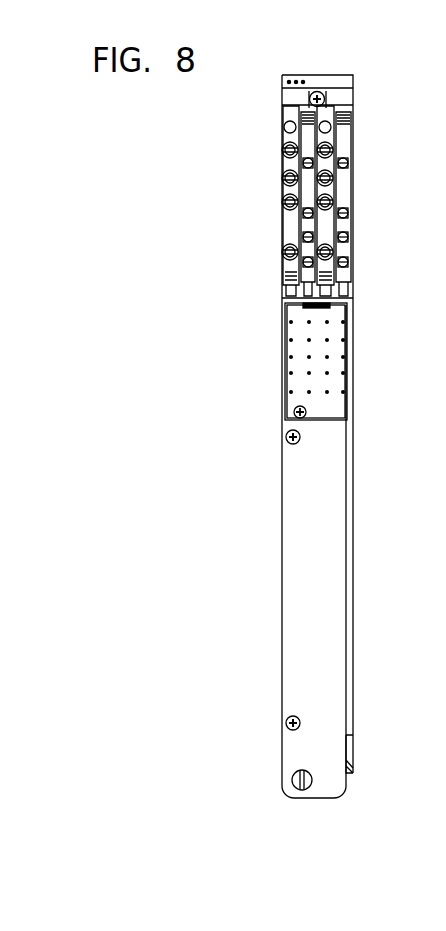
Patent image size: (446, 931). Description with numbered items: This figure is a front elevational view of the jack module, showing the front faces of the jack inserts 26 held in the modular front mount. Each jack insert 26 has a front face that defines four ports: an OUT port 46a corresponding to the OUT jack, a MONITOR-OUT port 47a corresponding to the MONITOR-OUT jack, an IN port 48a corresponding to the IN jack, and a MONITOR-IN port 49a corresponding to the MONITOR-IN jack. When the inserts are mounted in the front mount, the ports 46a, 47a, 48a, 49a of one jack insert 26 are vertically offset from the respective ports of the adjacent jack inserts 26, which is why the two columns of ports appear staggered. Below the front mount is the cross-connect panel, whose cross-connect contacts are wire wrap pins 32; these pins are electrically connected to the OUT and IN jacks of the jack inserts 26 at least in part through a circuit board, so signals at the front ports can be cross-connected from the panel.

The jack insert 26 is at (283, 268).
The wire wrap pin 32 is at (346, 323).
The OUT port 46a is at (283, 182).
The MONITOR-OUT port 47a is at (284, 148).
The IN port 48a is at (283, 203).
The MONITOR-IN port 49a is at (283, 250).